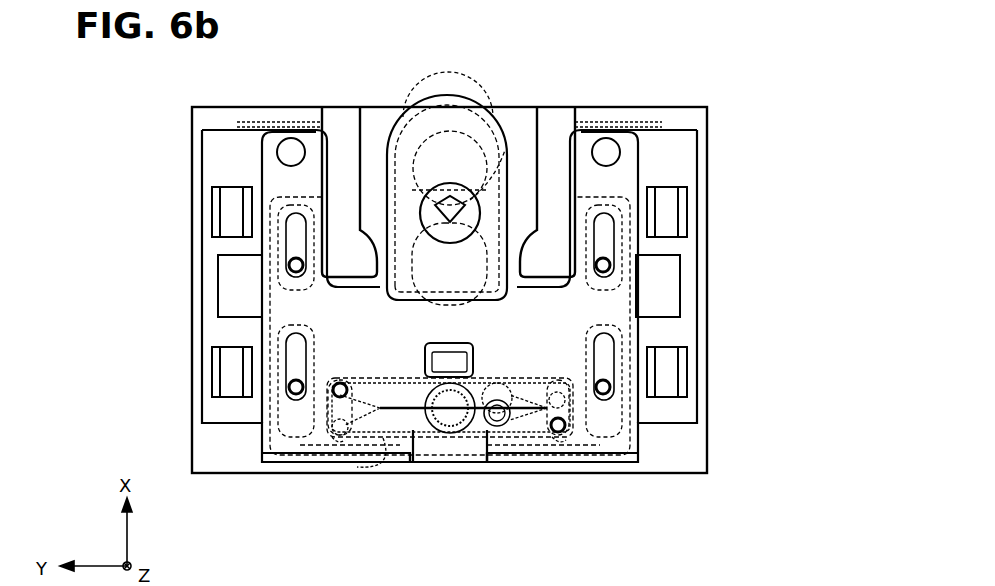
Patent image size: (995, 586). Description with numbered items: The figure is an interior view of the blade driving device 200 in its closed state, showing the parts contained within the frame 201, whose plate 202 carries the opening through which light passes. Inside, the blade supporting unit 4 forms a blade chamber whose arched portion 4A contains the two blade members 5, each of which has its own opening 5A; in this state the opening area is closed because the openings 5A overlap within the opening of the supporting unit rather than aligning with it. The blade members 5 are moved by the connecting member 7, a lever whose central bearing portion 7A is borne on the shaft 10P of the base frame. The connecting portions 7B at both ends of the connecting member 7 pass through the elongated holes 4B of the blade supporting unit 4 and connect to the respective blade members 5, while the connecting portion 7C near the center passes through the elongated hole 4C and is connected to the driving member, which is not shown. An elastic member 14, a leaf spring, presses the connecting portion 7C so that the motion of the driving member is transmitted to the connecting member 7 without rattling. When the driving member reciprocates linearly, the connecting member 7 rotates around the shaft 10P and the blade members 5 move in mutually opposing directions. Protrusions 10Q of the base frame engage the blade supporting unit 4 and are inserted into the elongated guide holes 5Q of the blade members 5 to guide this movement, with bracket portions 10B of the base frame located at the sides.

The blade driving device 200 is at (726, 74).
The frame 201 is at (655, 107).
The top plate 202 is at (372, 108).
The blade supporting unit 4 is at (408, 95).
The holder arch portion 4A is at (387, 165).
The elongated holes 4B is at (343, 437).
The elongated hole 4C is at (482, 378).
The blade members 5 is at (448, 200).
The opening 5A is at (503, 118).
The guide hole 5Q is at (290, 247).
The connecting member 7 is at (400, 410).
The bearing portion 7A is at (448, 433).
The connecting portions 7B is at (400, 415).
The connecting portion 7C is at (500, 426).
The holder bracket 10B is at (223, 208).
The shaft 10P is at (420, 462).
The protrusion 10Q is at (293, 270).
The elastic member 14 is at (357, 467).